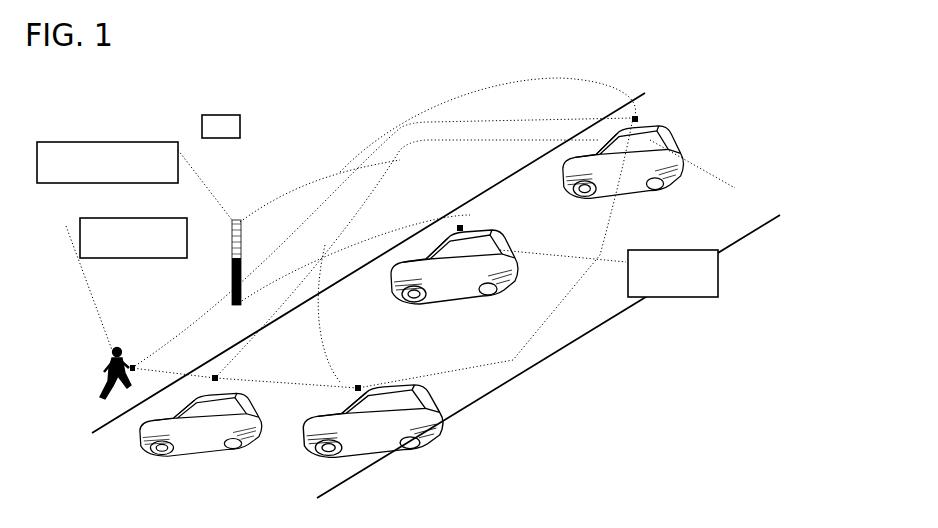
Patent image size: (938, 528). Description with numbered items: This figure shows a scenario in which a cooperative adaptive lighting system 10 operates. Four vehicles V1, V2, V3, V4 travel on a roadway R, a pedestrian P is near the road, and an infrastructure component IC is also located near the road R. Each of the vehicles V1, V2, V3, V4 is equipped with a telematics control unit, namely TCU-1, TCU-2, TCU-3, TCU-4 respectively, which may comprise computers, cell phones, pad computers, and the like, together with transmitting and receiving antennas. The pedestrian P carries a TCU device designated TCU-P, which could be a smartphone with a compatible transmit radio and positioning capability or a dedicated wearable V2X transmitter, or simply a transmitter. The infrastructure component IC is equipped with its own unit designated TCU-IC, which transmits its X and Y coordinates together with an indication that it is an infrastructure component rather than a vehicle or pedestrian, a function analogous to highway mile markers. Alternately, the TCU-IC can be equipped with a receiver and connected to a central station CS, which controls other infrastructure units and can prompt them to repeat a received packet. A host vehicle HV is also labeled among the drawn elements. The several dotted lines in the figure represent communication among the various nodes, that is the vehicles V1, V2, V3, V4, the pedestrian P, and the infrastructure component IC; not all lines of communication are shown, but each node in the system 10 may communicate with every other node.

The cooperative adaptive lighting system 10 is at (170, 124).
The central station CS is at (221, 126).
The infrastructure component IC is at (107, 162).
The pedestrian P is at (133, 308).
The telematics control unit of infrastructure component TCU-IC is at (246, 205).
The telematics control unit of pedestrian TCU-P is at (137, 350).
The telematics control unit of vehicle V1 TCU-1 is at (655, 118).
The telematics control unit of vehicle V2 TCU-2 is at (482, 229).
The telematics control unit of vehicle V3 TCU-3 is at (228, 398).
The telematics control unit of vehicle V4 TCU-4 is at (363, 366).
The vehicle V1 is at (612, 162).
The vehicle V2 is at (454, 256).
The vehicle V3 is at (222, 366).
The vehicle V4 is at (373, 404).
The host vehicle HV is at (673, 273).
The roadway R is at (767, 224).